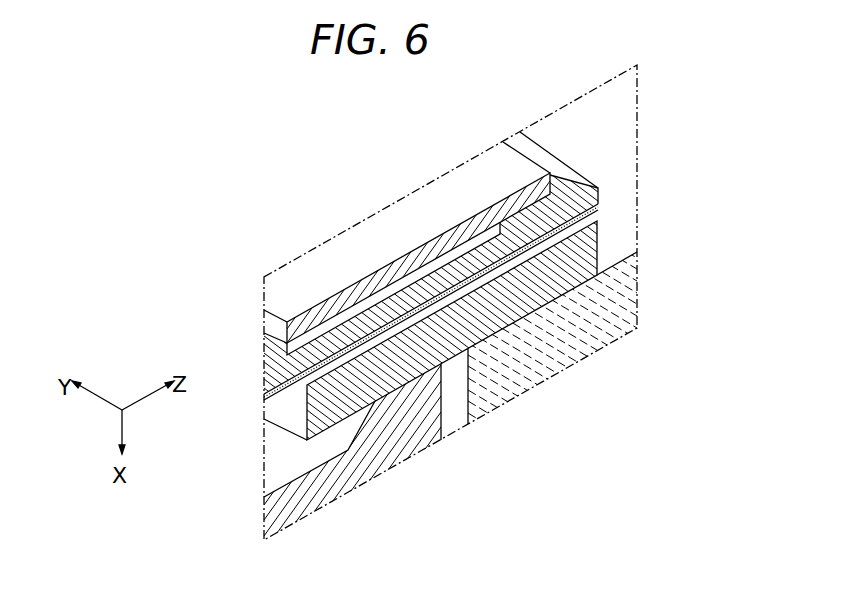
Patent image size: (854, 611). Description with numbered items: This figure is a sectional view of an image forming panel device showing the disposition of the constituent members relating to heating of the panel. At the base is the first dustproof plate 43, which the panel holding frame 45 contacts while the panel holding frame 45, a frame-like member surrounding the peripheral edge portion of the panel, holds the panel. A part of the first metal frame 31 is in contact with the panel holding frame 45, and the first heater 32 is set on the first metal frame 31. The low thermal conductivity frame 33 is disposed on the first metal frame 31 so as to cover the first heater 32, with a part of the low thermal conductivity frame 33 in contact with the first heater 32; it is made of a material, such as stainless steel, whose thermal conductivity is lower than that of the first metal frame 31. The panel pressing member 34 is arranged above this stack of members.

The first metal frame 31 is at (596, 247).
The first heater 32 is at (578, 236).
The low thermal conductivity frame 33 is at (582, 190).
The panel pressing member 34 is at (422, 207).
The first dustproof plate 43 is at (580, 342).
The panel holding frame 45 is at (408, 440).